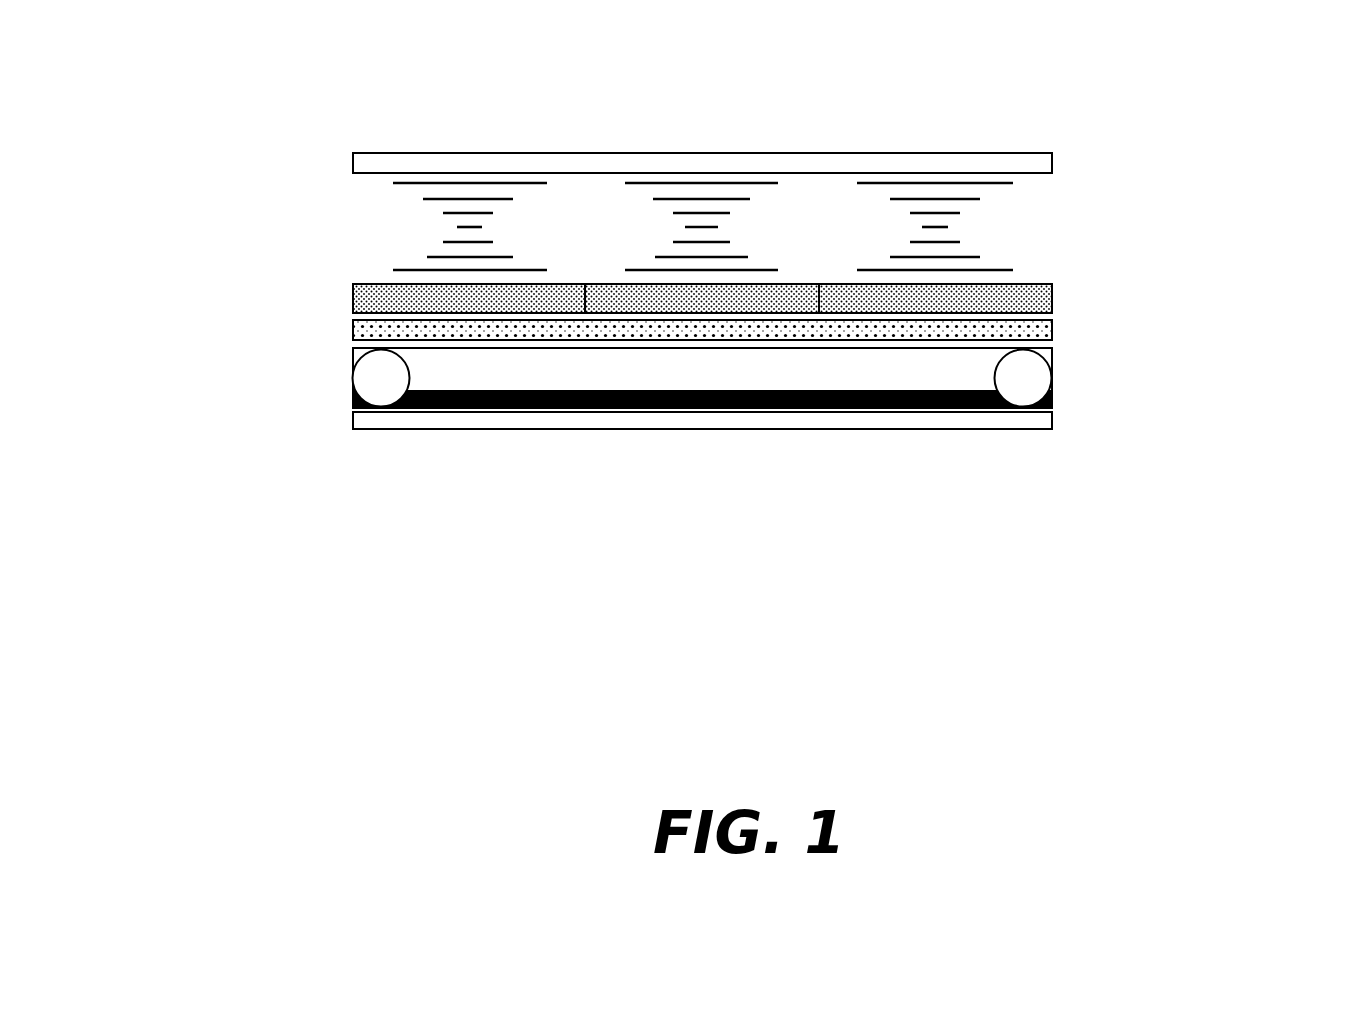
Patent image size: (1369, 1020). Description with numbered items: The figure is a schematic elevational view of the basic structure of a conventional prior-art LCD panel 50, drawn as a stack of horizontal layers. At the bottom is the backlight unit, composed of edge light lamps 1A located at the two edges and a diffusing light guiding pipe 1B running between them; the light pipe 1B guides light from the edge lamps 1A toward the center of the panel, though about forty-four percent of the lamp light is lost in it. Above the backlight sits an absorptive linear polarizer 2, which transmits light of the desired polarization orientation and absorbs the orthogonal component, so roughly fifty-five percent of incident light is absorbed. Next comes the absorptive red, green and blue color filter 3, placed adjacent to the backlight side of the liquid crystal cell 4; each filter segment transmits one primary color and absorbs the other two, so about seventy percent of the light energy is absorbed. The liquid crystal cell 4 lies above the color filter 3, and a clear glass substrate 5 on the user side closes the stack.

The LCD panel 50 is at (570, 533).
The clear substrate 5 is at (1052, 160).
The liquid crystal cell 4 is at (1028, 230).
The color filter 3 is at (1148, 292).
The linear polarizer 2 is at (1052, 334).
The edge light lamp 1A is at (1148, 373).
The light guiding pipe 1B is at (699, 372).